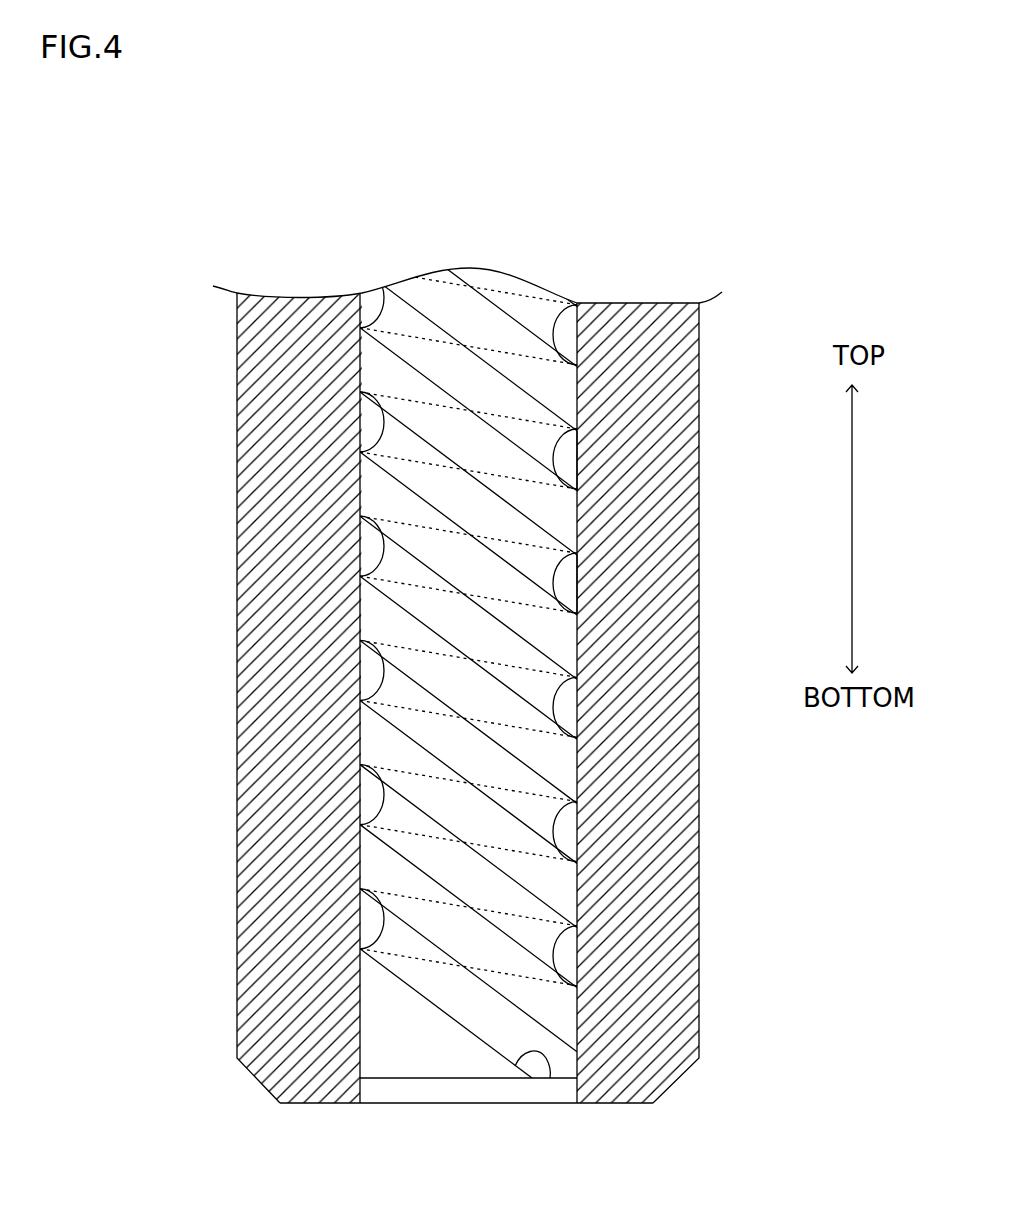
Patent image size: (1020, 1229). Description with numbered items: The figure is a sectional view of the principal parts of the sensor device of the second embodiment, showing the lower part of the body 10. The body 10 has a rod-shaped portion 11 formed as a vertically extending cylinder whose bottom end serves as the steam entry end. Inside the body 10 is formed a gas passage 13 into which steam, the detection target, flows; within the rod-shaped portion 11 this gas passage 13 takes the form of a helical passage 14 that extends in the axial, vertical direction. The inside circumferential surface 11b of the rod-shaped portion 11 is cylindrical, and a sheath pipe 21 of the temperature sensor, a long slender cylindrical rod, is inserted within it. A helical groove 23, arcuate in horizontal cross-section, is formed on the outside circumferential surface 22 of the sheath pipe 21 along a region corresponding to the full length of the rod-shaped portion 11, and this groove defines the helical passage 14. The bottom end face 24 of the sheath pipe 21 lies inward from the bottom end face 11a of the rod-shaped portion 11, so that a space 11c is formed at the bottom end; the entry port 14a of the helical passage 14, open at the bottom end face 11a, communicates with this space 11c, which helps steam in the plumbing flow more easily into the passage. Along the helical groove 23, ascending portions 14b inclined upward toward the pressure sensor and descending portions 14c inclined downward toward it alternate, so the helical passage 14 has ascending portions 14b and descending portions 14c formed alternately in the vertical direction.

The body 10 is at (503, 724).
The rod-shaped portion 11 is at (446, 724).
The bottom end face 11a is at (318, 1103).
The inside circumferential surface 11b is at (575, 925).
The space 11c is at (473, 1103).
The gas passage 13 is at (471, 662).
The helical passage 14 is at (447, 662).
The entry port 14a is at (542, 1078).
The ascending portions 14b is at (555, 824).
The descending portions 14c is at (673, 752).
The sheath pipe 21 is at (578, 447).
The outside circumferential surface 22 is at (578, 557).
The helical groove 23 is at (380, 548).
The bottom end face 24 is at (422, 1078).